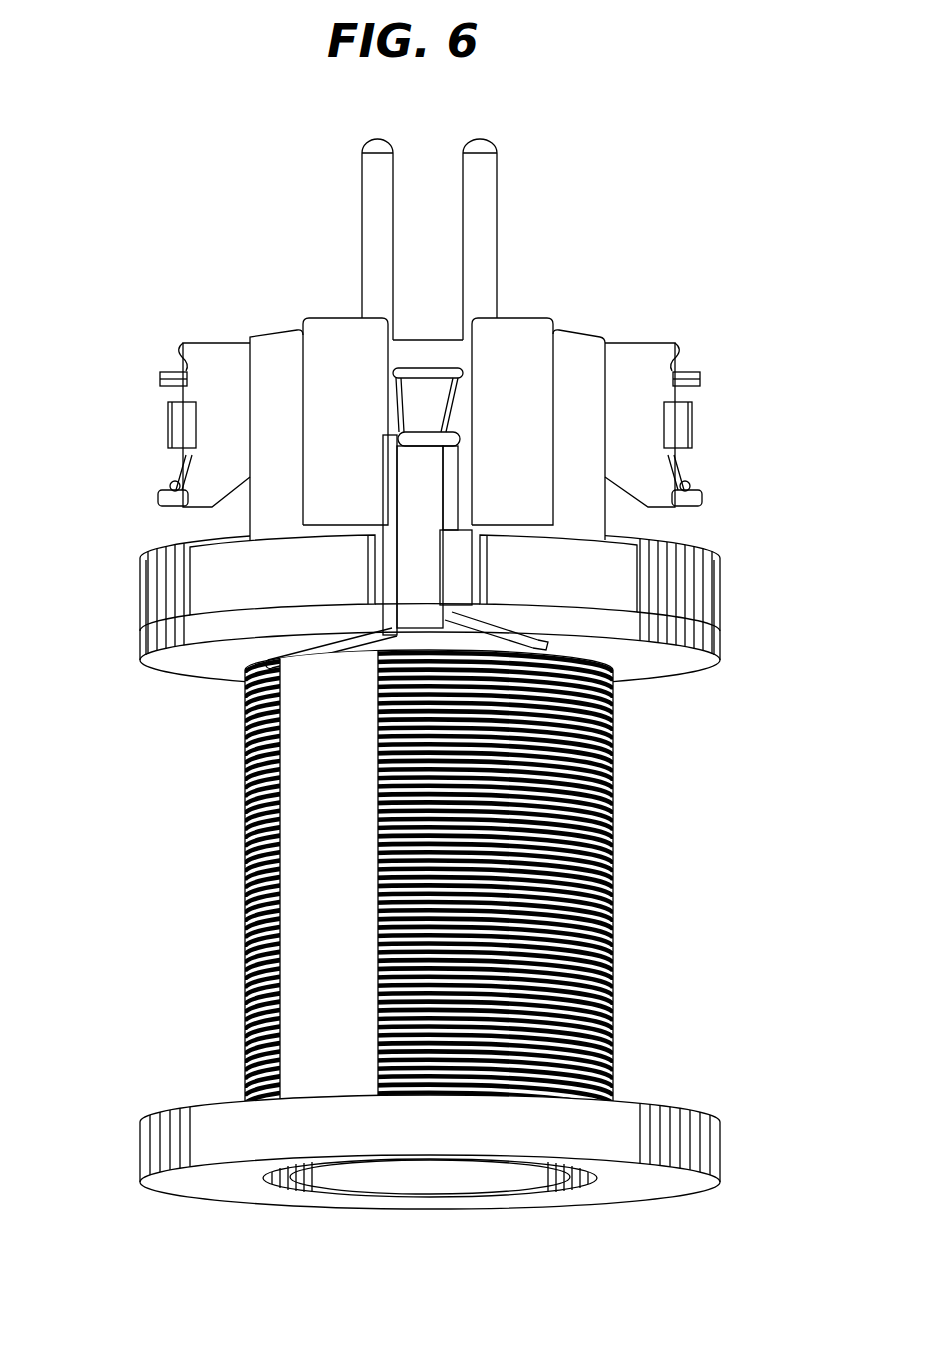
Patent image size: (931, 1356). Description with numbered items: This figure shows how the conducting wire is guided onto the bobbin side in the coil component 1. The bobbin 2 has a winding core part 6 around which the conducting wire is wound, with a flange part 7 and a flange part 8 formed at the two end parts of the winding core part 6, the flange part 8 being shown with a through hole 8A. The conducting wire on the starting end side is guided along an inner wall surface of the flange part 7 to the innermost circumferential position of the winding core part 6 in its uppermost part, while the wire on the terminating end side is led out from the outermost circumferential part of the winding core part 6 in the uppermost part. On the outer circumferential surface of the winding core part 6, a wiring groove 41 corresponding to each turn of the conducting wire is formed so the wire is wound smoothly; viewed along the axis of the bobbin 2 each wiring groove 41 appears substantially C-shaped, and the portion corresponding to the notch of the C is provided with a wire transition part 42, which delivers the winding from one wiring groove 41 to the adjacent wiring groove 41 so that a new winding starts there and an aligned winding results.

The coil component 1 is at (232, 224).
The bobbin 2 is at (210, 742).
The winding core part 6 is at (414, 876).
The flange part 7 is at (712, 643).
The flange part 8 is at (457, 1162).
The through hole 8A is at (568, 1185).
The wiring groove 41 is at (612, 823).
The wire transition part 42 is at (325, 932).